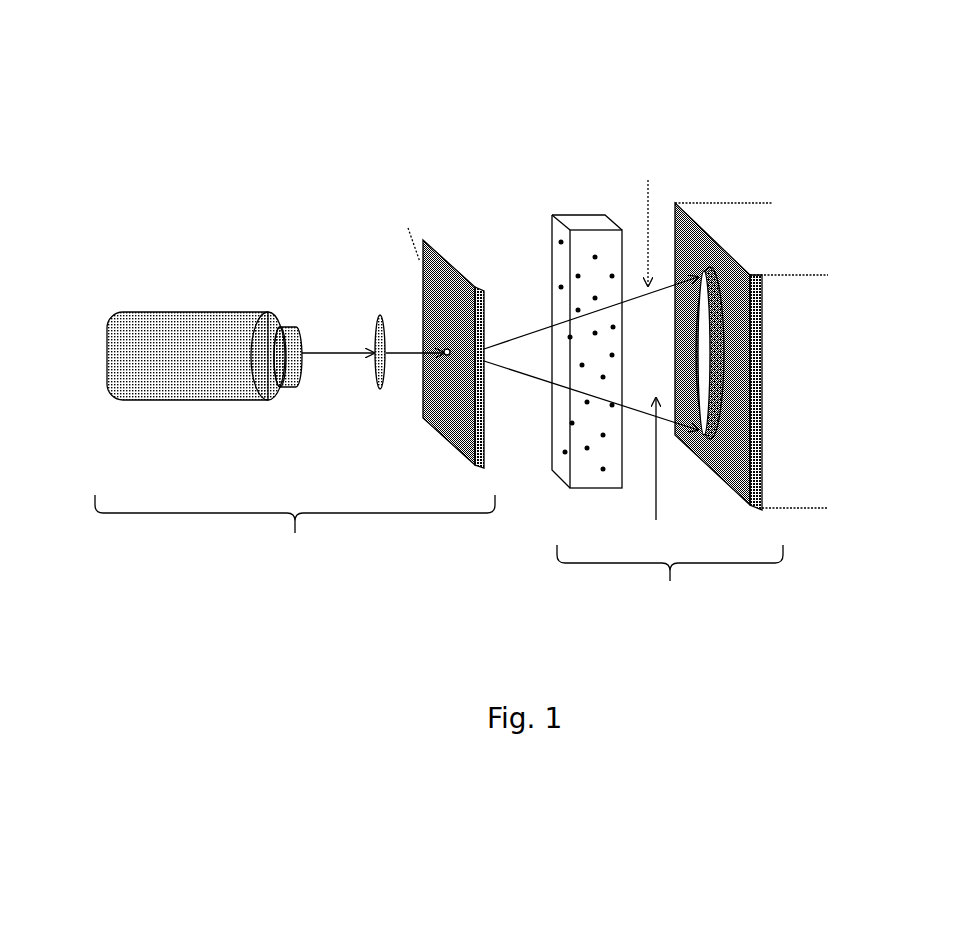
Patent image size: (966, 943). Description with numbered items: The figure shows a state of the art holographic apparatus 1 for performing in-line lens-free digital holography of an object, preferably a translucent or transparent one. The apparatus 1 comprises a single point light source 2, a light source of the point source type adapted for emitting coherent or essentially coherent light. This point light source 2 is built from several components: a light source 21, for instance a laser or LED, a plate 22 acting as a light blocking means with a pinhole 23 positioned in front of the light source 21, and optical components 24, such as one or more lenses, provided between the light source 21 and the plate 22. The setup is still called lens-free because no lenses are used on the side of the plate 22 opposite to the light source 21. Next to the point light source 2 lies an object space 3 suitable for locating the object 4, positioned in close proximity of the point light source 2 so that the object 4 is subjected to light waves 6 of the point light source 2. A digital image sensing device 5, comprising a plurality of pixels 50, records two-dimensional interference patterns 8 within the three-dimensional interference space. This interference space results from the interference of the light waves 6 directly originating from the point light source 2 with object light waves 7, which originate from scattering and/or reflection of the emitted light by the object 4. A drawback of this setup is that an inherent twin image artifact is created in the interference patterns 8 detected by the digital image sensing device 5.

The holographic apparatus 1 is at (157, 166).
The single point light source 2 is at (295, 537).
The object space 3 is at (670, 582).
The object 4 is at (570, 230).
The digital image sensing device 5 is at (720, 245).
The light waves 6 is at (518, 320).
The object light waves 7 is at (672, 418).
The interference patterns 8 is at (708, 345).
The light source 21 is at (130, 345).
The plate 22 is at (458, 292).
The pinhole 23 is at (444, 349).
The optical components 24 is at (380, 342).
The pixels 50 is at (730, 482).